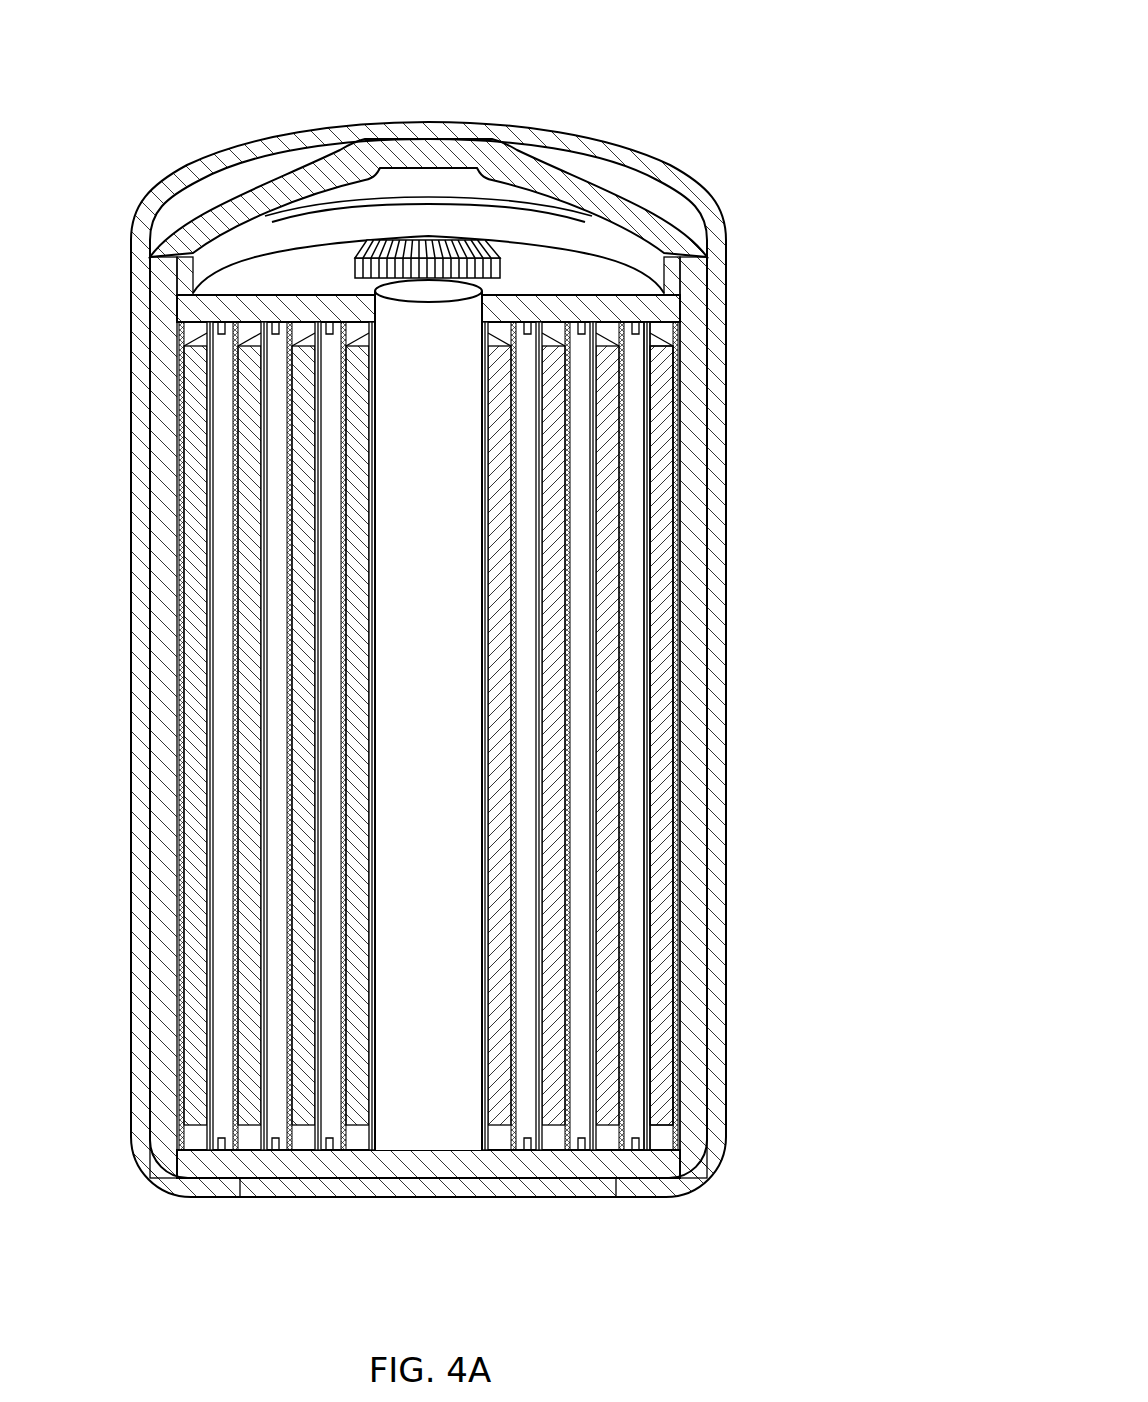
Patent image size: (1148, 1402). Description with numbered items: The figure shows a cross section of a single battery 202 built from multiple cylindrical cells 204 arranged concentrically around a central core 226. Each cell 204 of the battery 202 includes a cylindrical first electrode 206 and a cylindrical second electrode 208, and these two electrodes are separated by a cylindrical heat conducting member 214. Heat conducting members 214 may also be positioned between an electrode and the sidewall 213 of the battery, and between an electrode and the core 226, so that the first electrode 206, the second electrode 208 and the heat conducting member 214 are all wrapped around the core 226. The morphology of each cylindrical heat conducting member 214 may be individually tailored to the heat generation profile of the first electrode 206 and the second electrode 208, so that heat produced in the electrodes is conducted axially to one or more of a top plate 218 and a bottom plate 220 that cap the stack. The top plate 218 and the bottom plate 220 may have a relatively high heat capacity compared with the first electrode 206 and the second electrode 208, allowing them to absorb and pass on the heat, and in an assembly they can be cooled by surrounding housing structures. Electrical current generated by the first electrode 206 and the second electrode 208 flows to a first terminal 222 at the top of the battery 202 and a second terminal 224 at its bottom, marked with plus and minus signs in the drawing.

The battery 202 is at (801, 103).
The cylindrical cell 204 is at (650, 393).
The first electrode 206 is at (633, 567).
The second electrode 208 is at (693, 437).
The sidewall 213 is at (693, 710).
The heat conducting member 214 is at (643, 661).
The top plate 218 is at (640, 282).
The bottom plate 220 is at (565, 1172).
The first terminal 222 is at (514, 106).
The second terminal 224 is at (453, 1211).
The core 226 is at (386, 320).